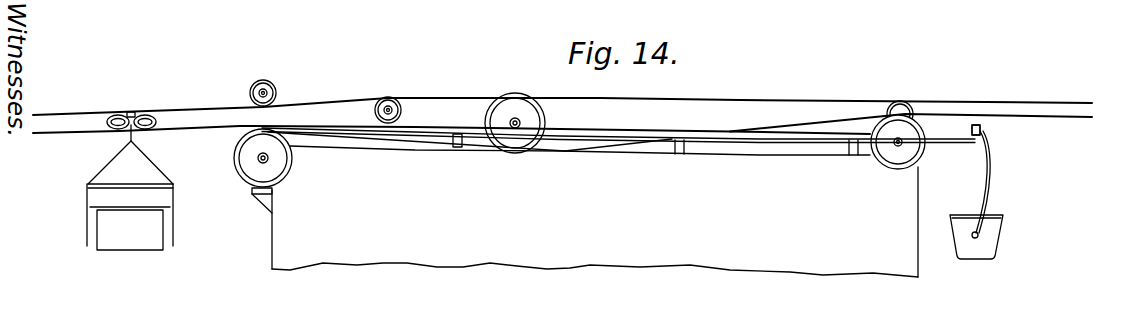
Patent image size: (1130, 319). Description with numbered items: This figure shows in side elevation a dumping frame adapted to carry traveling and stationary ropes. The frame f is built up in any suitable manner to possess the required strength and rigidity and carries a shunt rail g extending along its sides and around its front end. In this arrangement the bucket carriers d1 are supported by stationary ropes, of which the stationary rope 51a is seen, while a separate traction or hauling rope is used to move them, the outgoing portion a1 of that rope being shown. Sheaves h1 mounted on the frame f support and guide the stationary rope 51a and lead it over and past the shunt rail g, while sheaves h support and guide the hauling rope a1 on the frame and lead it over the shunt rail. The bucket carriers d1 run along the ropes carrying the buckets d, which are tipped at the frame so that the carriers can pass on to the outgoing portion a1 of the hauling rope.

The outgoing portion of the rope a1 is at (86, 114).
The stationary rope 51a is at (70, 133).
The sheaves h is at (380, 103).
The sheaves h1 is at (513, 105).
The shunt rail g is at (441, 131).
The bucket carriers d1 is at (151, 128).
The buckets d is at (1012, 242).
The frame f is at (595, 222).